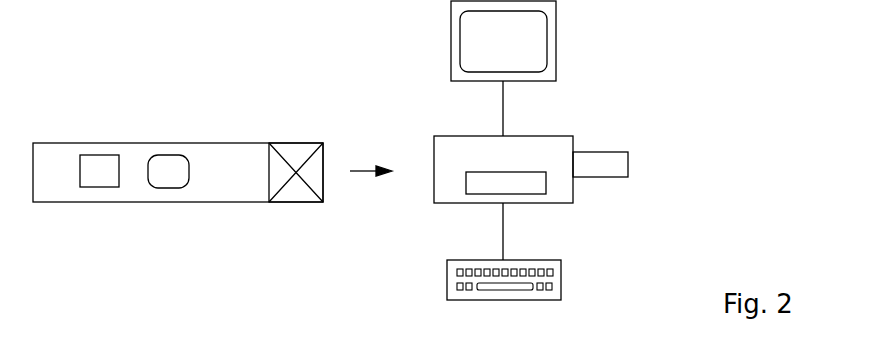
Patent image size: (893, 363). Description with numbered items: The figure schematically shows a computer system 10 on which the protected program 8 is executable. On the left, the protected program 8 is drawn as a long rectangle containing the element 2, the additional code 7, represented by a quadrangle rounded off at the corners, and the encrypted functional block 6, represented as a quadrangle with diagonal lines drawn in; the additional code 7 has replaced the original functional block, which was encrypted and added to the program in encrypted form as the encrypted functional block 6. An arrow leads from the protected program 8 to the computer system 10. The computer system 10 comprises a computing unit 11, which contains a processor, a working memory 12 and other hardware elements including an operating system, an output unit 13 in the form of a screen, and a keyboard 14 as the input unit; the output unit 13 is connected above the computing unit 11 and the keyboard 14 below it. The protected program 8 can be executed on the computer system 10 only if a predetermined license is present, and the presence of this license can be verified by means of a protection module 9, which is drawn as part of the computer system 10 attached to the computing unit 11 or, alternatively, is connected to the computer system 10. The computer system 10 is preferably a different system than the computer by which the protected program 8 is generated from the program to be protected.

The sensor element 2 is at (92, 187).
The encrypted functional block 6 is at (313, 202).
The additional code 7 is at (163, 188).
The protected program 8 is at (233, 202).
The protection module 9 is at (593, 177).
The computer system 10 is at (435, 188).
The computing unit 11 is at (460, 203).
The working memory 12 is at (542, 194).
The output unit 13 is at (450, 48).
The keyboard 14 is at (473, 300).